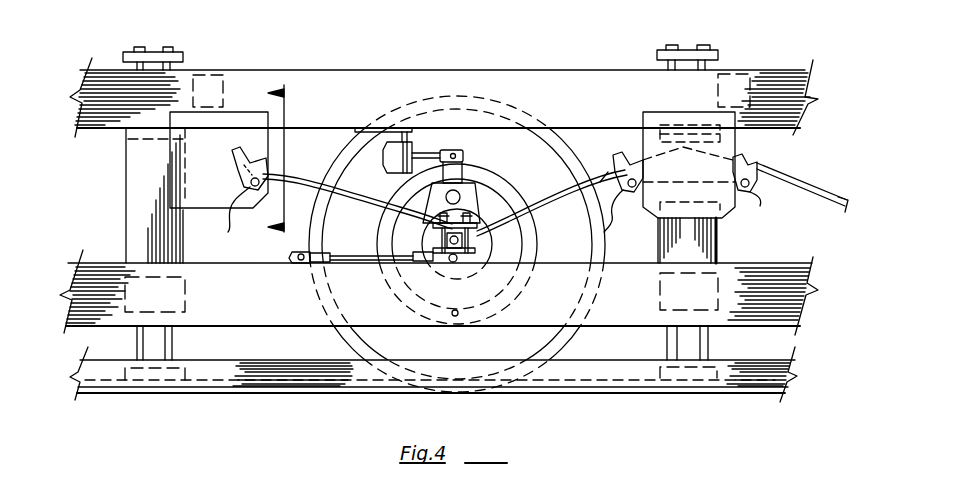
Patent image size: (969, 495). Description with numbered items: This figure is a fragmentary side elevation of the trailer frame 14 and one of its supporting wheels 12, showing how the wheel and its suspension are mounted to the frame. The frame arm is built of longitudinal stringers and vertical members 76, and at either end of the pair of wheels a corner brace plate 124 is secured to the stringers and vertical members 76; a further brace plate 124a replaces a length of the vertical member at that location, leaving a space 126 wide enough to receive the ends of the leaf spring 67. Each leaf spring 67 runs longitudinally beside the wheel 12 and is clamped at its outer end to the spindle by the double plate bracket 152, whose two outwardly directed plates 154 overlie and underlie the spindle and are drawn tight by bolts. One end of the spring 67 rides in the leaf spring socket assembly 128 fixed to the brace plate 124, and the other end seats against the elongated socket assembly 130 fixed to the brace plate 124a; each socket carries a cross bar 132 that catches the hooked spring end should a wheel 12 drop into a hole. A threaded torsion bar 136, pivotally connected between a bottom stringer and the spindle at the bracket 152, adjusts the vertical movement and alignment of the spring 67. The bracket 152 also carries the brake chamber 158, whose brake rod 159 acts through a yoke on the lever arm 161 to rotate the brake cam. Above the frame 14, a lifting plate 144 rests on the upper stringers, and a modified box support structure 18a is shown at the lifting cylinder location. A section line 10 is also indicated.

The section line 10 is at (263, 160).
The wheel 12 is at (522, 293).
The frame 14 is at (788, 68).
The modified box support structure 18a is at (727, 220).
The leaf spring 67 is at (543, 196).
The vertical member 76 is at (156, 195).
The corner brace plate 124 is at (224, 188).
The brace plate 124a is at (733, 142).
The space 126 is at (697, 195).
The leaf spring socket assembly 128 is at (263, 163).
The leaf spring socket assembly 130 is at (800, 179).
The cross bar 132 is at (236, 212).
The torsion bar 136 is at (350, 266).
The lifting plate 144 is at (182, 50).
The double plate bracket 152 is at (467, 207).
The plates 154 is at (475, 233).
The brake chamber 158 is at (410, 128).
The brake rod 159 is at (430, 152).
The lever arm 161 is at (458, 168).